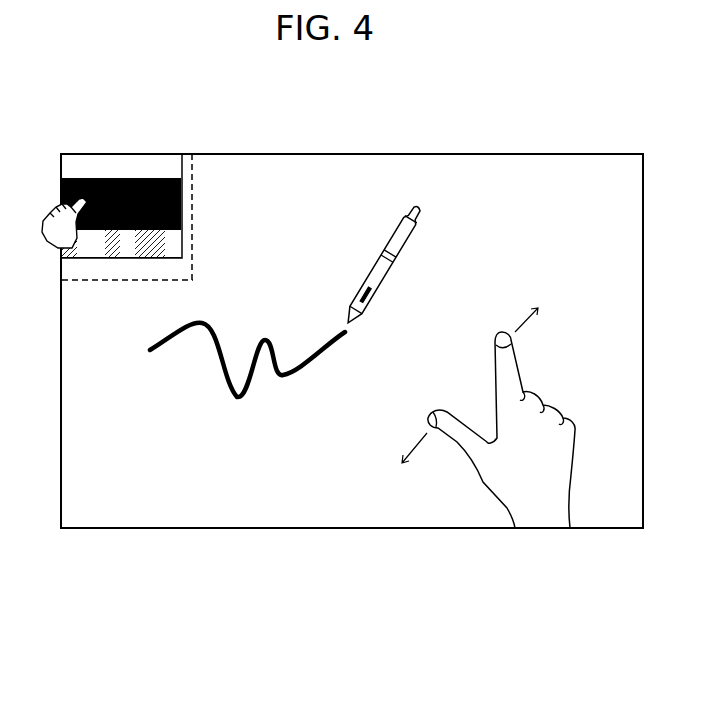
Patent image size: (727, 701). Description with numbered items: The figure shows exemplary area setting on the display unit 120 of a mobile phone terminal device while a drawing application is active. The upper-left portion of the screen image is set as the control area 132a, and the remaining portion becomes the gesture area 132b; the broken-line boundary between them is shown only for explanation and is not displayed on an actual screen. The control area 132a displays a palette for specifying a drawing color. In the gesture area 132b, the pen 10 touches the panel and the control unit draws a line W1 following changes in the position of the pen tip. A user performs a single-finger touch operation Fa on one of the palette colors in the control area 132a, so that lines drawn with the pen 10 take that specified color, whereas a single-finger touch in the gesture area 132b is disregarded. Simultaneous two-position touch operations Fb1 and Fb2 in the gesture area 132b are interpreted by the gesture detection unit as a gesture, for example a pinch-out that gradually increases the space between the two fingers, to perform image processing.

The pen 10 is at (397, 242).
The display unit 120 is at (260, 530).
The control area 132a is at (170, 163).
The gesture area 132b is at (440, 178).
The touch operation Fa is at (50, 238).
The touch operation Fb1 is at (518, 345).
The touch operation Fb2 is at (445, 412).
The line W1 is at (220, 367).